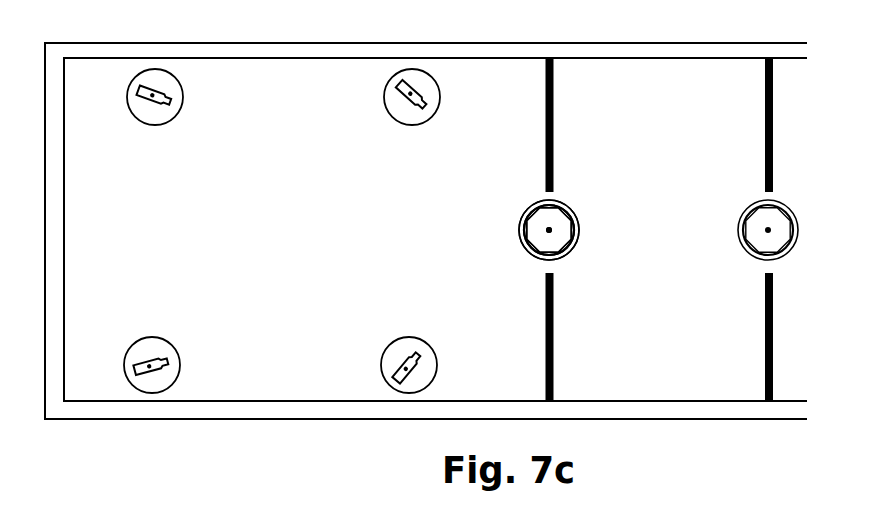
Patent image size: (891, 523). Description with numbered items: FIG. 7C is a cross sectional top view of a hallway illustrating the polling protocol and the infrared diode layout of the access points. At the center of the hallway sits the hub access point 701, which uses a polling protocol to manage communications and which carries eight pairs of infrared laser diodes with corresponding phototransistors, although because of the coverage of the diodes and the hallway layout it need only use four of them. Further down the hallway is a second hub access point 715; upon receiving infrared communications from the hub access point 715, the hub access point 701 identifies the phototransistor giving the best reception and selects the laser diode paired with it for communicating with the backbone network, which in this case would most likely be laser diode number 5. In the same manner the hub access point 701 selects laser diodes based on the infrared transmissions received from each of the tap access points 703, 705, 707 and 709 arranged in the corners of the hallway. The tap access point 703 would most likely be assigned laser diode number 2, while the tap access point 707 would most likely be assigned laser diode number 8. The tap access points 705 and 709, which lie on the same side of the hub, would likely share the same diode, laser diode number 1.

The laser diode number 1 is at (520, 231).
The laser diode number 2 is at (528, 212).
The laser diode number 5 is at (584, 227).
The laser diode number 8 is at (528, 252).
The hub access point 701 is at (580, 247).
The tap access point 703 is at (387, 113).
The tap access point 705 is at (155, 337).
The tap access point 707 is at (409, 337).
The tap access point 709 is at (184, 95).
The hub access point 715 is at (800, 222).